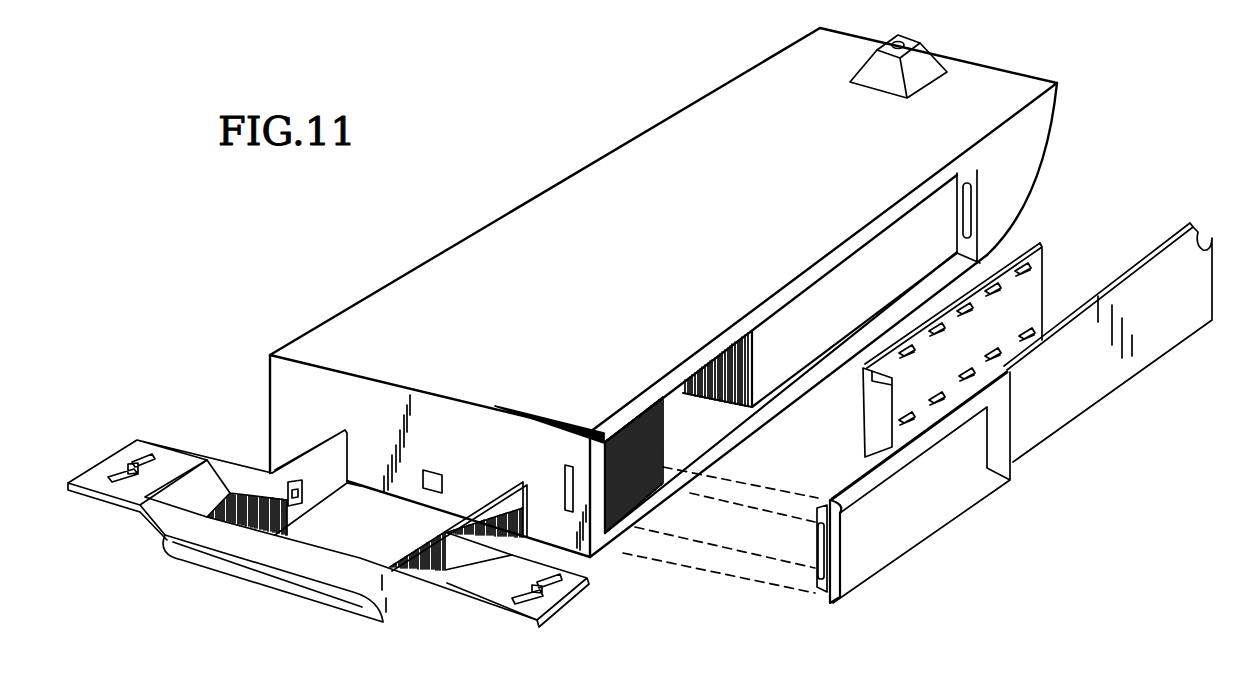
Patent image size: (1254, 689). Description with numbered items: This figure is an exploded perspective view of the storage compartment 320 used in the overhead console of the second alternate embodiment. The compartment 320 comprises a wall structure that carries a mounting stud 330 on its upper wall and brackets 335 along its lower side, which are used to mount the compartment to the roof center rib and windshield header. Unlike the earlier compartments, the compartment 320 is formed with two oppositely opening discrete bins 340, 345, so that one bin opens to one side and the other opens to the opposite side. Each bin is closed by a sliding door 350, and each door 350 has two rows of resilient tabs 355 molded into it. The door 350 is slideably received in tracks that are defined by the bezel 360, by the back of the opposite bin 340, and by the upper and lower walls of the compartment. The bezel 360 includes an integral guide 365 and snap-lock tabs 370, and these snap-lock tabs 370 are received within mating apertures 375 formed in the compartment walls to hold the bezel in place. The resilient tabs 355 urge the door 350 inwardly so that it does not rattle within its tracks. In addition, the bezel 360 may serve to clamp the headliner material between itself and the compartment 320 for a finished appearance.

The compartment 320 is at (565, 180).
The mounting stud 330 is at (922, 62).
The brackets 335 is at (588, 580).
The bin 340 is at (838, 297).
The bin 345 is at (730, 423).
The sliding door 350 is at (1103, 298).
The resilient tabs 355 is at (912, 352).
The bezel 360 is at (943, 517).
The integral guide 365 is at (1103, 390).
The snap-lock tabs 370 is at (972, 210).
The apertures 375 is at (565, 497).